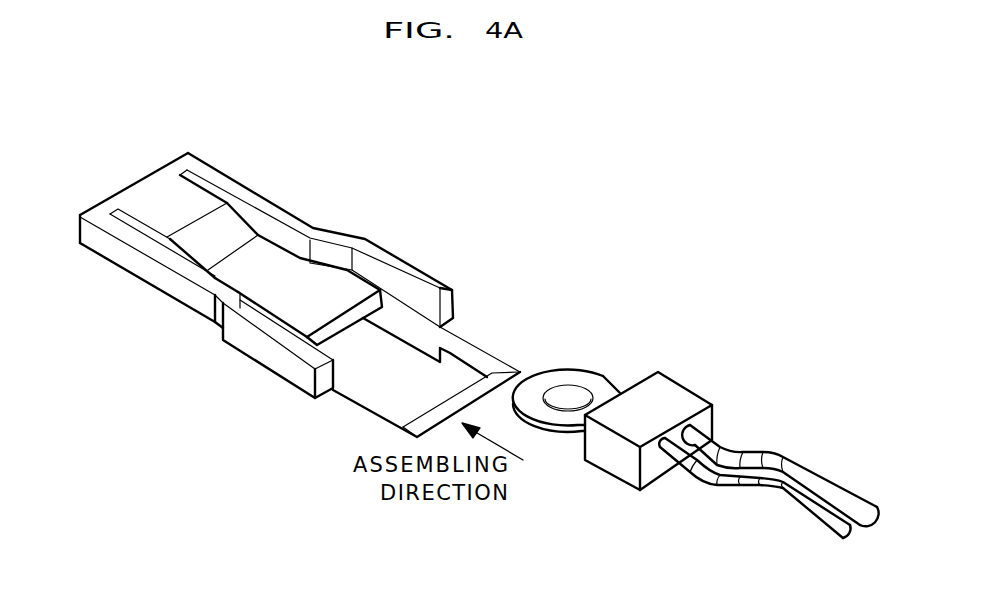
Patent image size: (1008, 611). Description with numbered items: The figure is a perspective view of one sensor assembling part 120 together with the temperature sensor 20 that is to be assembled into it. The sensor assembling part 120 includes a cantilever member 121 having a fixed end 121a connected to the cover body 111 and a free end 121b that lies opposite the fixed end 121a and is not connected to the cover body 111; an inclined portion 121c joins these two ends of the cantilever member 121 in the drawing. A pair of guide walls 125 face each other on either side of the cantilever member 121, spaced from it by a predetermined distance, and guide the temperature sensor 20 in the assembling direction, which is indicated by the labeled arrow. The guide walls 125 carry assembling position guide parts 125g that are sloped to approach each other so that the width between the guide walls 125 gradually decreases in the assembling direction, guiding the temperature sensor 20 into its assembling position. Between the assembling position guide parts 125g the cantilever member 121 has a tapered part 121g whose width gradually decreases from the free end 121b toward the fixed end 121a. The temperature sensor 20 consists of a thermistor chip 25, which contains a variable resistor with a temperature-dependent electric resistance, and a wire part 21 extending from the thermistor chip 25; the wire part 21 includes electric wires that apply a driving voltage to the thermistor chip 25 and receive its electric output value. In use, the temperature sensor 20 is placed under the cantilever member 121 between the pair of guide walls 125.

The cover body 111 is at (140, 183).
The sensor assembling part 120 is at (287, 276).
The cantilever member 121 is at (272, 254).
The fixed end 121a is at (163, 192).
The free end 121b is at (343, 307).
The inclined portion of tongue 121c is at (223, 232).
The tapered part 121g is at (240, 300).
The guide walls 125 is at (442, 288).
The assembling position guide parts 125g is at (218, 322).
The temperature sensor 20 is at (676, 587).
The wire part 21 is at (787, 500).
The thermistor chip 25 is at (625, 465).